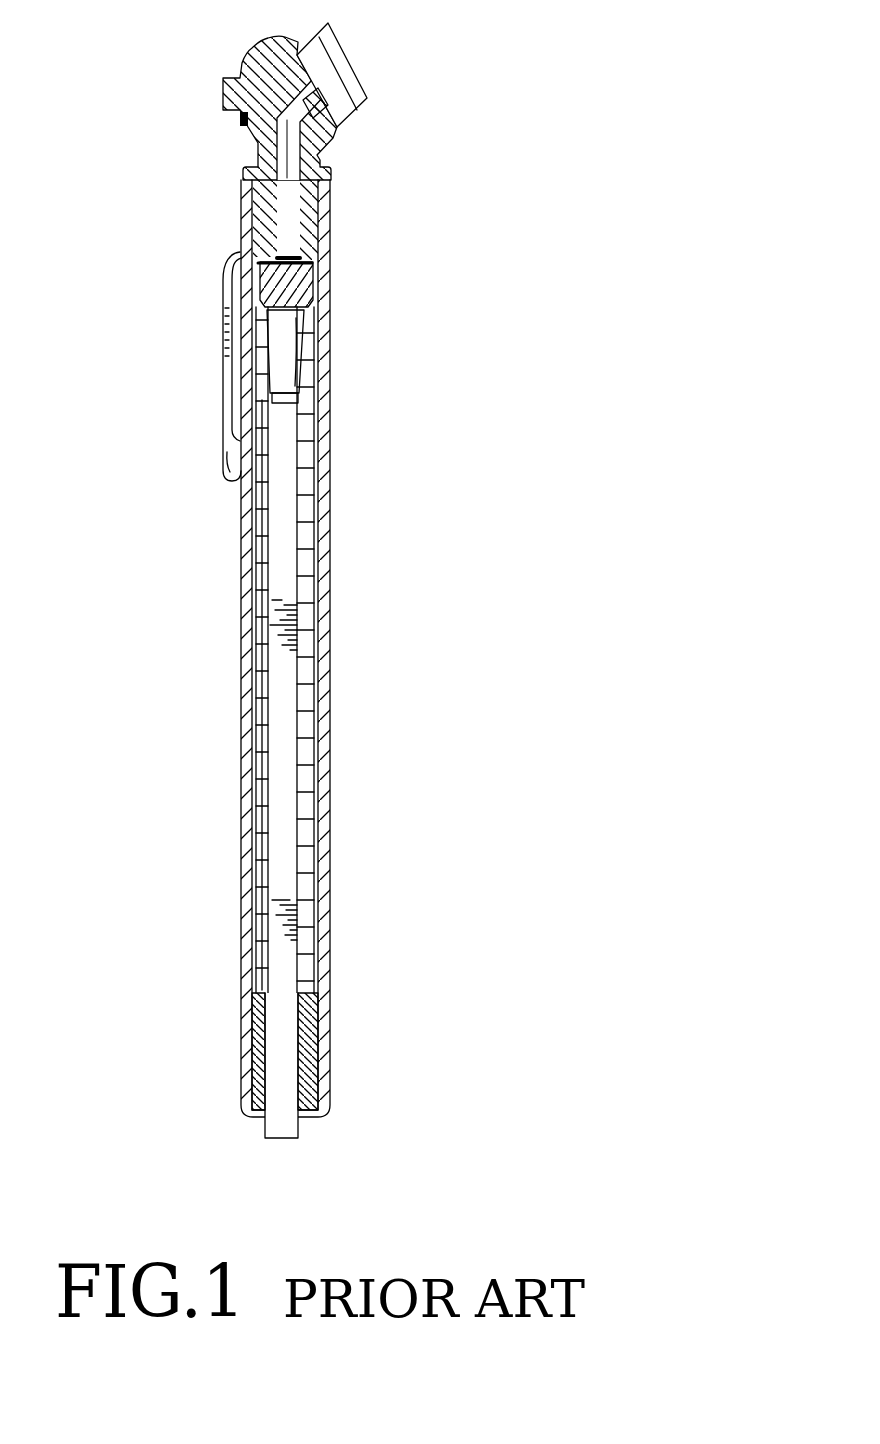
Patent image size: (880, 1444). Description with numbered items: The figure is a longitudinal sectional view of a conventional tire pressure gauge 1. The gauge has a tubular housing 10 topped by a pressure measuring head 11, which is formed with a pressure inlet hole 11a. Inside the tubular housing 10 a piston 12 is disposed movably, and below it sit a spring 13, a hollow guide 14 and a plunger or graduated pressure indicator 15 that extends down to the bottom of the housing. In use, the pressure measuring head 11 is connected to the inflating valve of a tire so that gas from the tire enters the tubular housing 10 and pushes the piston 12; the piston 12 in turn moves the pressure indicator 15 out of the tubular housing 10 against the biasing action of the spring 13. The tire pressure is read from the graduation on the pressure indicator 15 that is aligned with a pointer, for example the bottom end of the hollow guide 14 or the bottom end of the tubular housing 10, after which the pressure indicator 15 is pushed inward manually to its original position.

The conventional tire pressure gauge 1 is at (362, 573).
The tubular housing 10 is at (328, 620).
The pressure measuring head 11 is at (328, 124).
The pressure inlet hole 11a is at (343, 60).
The piston 12 is at (300, 267).
The spring 13 is at (307, 400).
The hollow guide 14 is at (328, 1010).
The graduated pressure indicator 15 is at (290, 548).